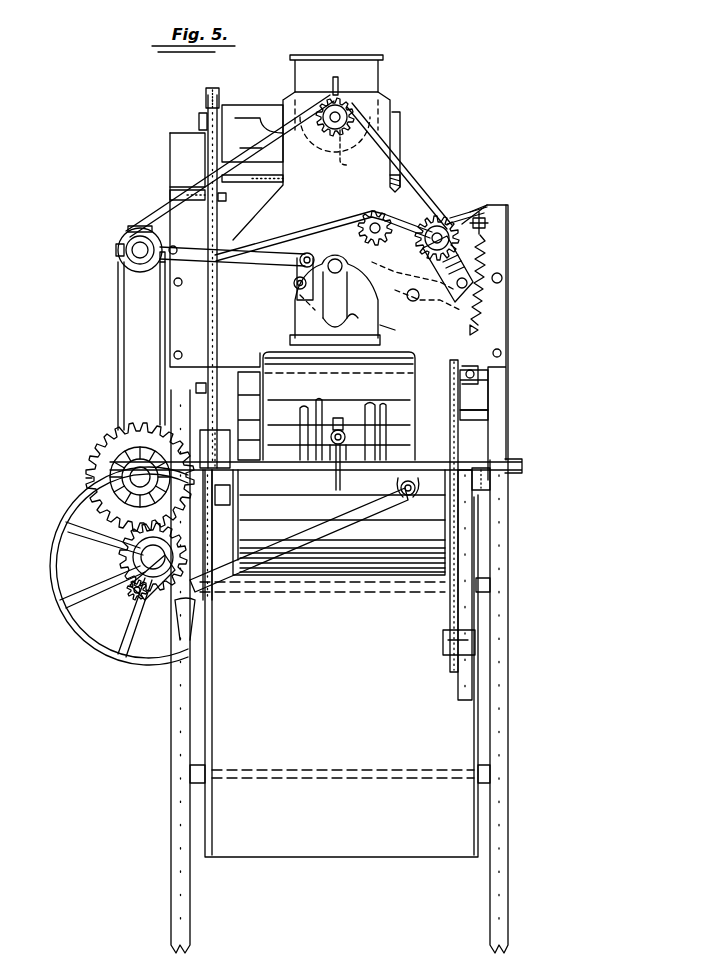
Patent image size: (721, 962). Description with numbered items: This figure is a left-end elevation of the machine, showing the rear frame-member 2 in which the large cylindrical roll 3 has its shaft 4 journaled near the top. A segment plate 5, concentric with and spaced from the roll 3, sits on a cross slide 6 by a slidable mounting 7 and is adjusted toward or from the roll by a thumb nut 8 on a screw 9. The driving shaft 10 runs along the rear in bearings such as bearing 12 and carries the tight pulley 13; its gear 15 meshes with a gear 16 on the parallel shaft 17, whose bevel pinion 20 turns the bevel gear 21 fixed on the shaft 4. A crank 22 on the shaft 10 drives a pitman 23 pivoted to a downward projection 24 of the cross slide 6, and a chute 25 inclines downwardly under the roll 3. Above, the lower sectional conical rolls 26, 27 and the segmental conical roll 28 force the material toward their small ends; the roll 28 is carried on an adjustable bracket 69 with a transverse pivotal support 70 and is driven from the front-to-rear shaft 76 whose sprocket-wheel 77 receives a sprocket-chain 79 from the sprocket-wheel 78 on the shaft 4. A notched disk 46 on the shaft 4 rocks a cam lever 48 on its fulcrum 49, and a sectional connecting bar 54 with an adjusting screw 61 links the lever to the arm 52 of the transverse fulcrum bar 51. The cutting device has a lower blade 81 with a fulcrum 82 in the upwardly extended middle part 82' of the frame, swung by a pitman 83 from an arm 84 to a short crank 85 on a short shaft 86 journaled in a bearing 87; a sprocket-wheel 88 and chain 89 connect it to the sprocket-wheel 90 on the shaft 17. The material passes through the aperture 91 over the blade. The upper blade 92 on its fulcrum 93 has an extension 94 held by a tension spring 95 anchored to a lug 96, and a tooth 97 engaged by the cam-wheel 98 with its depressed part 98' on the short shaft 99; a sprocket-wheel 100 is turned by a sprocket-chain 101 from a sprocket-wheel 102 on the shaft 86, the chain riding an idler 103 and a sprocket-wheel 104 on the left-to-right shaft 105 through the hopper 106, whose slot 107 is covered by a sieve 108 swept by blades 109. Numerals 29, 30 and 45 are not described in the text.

The rear frame-member 2 is at (171, 708).
The cylindrical roll 3 is at (328, 578).
The shaft 4 is at (505, 612).
The segment plate 5 is at (415, 356).
The cross slide 6 is at (318, 472).
The slidable mounting 7 is at (335, 430).
The thumb nut 8 is at (372, 410).
The screw 9 is at (340, 472).
The driving shaft 10 is at (140, 560).
The bearing 12 is at (136, 598).
The tight pulley 13 is at (92, 640).
The gear 15 is at (140, 575).
The gear 16 is at (106, 447).
The parallel shaft 17 is at (92, 478).
The bevel pinion 20 is at (140, 445).
The bevel gear 21 is at (200, 447).
The crank 22 is at (125, 630).
The pitman 23 is at (252, 575).
The downward projection 24 is at (408, 495).
The chute 25 is at (330, 848).
The sectional elongated conical roll 26 is at (385, 322).
The sectional elongated conical roll 27 is at (320, 322).
The segmental elongated conical roll 28 is at (334, 259).
The lever arm 29 is at (372, 303).
The pin 30 is at (378, 330).
The side plate 45 is at (198, 372).
The disk 46 is at (459, 440).
The cam lever 48 is at (472, 562).
The fulcrum 49 is at (450, 650).
The transverse fulcrum bar 51 is at (196, 393).
The upwardly projecting arm 52 is at (488, 388).
The sectional connecting bar 54 is at (480, 368).
The adjusting screw 61 is at (342, 262).
The adjustable bracket 69 is at (400, 140).
The transverse pivotal support 70 is at (401, 183).
The front-to-rear shaft 76 is at (199, 122).
The sprocket-wheel 77 is at (212, 88).
The sprocket-wheel 78 is at (231, 494).
The sprocket-chain 79 is at (218, 218).
The lower blade 81 is at (292, 340).
The fulcrum 82 is at (287, 274).
The upwardly extended middle part 82' is at (448, 243).
The pitman 83 is at (228, 256).
The arm 84 is at (302, 254).
The short crank 85 is at (160, 262).
The short shaft 86 is at (118, 255).
The bearing 87 is at (118, 248).
The sprocket-wheel 88 is at (135, 228).
The chain 89 is at (118, 332).
The sprocket-wheel 90 is at (120, 410).
The aperture 91 is at (320, 335).
The upper blade 92 is at (356, 266).
The fulcrum 93 is at (415, 302).
The extension 94 is at (478, 325).
The tension spring 95 is at (484, 262).
The lug 96 is at (486, 223).
The tooth 97 is at (485, 290).
The cam-wheel 98 is at (494, 194).
The depressed part 98' is at (502, 169).
The short shaft 99 is at (449, 239).
The sprocket-wheel 100 is at (470, 210).
The sprocket-chain 101 is at (400, 160).
The sprocket-wheel 102 is at (127, 230).
The idler 103 is at (372, 211).
The sprocket-wheel 104 is at (348, 112).
The left-to-right shaft 105 is at (332, 125).
The hopper 106 is at (370, 80).
The slot 107 is at (348, 165).
The sieve 108 is at (352, 120).
The blades 109 is at (332, 80).